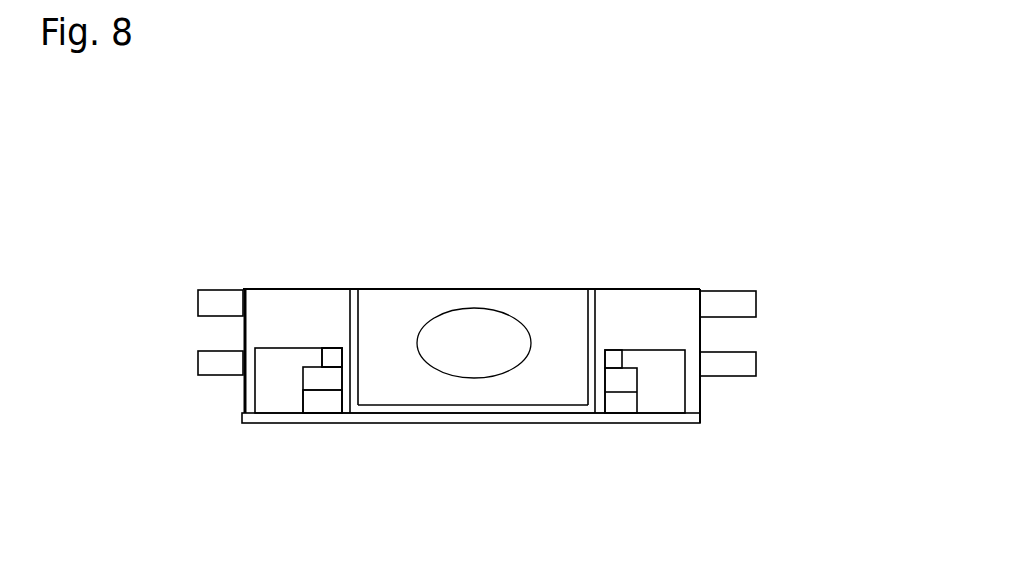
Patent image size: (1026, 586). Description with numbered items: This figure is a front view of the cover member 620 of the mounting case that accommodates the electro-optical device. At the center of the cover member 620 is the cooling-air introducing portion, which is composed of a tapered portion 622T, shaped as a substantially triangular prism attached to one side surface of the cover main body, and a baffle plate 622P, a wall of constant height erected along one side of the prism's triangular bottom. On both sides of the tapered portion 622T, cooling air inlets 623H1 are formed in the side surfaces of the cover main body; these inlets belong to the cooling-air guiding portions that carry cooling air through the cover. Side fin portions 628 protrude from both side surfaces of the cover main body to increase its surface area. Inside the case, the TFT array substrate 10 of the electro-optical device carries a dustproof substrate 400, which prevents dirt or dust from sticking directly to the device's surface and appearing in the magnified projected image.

The cover member 620 is at (498, 202).
The tapered portion 622T is at (547, 303).
The baffle plate 622P is at (585, 372).
The cooling air inlets 623H1 is at (280, 387).
The side fin portions 628 is at (215, 375).
The TFT array substrate 10 is at (338, 356).
The dustproof substrate 400 is at (322, 408).